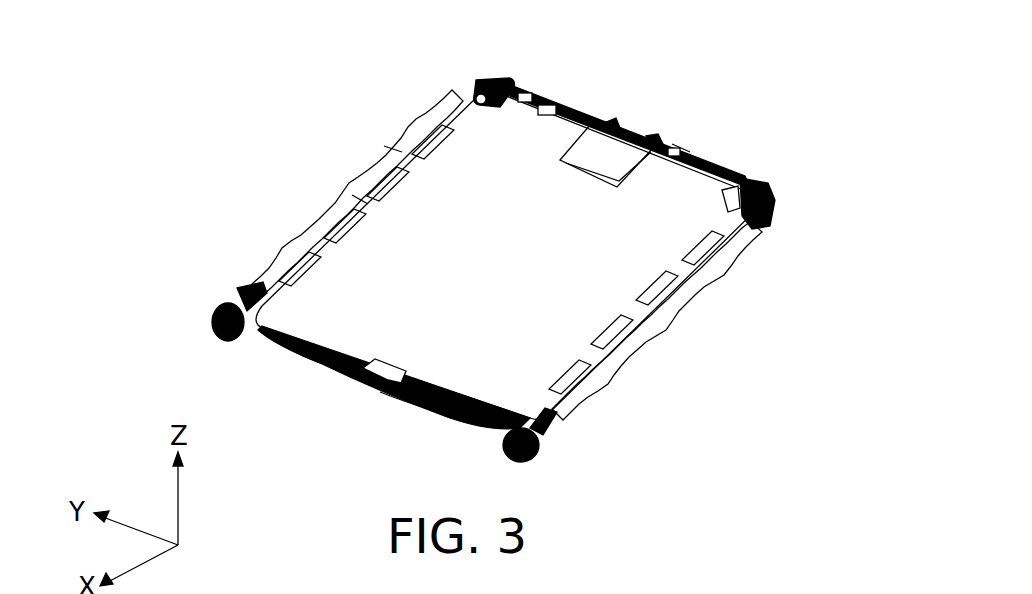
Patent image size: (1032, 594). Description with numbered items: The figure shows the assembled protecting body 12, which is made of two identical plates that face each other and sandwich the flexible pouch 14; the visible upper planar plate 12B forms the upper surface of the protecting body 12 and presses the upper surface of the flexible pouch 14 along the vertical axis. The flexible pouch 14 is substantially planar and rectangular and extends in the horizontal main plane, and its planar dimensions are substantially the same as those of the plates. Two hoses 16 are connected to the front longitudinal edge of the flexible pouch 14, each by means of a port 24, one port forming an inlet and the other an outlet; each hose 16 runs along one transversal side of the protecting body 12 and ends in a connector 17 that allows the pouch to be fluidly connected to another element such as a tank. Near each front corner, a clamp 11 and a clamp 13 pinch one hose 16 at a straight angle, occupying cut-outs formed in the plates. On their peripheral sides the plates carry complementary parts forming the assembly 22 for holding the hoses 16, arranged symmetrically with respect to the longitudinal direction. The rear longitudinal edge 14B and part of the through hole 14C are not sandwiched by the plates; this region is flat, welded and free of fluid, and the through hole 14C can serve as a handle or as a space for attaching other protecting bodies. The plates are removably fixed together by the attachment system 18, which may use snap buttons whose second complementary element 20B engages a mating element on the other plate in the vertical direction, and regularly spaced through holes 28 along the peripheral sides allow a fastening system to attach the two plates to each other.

The clamp 11 is at (507, 80).
The protecting body 12 is at (622, 220).
The planar plate 12B is at (606, 276).
The clamp 13 is at (770, 204).
The flexible pouch 14 is at (362, 398).
The rear longitudinal edge 14B is at (320, 367).
The through hole 14C is at (393, 378).
The hose 16 is at (543, 100).
The connector 17 is at (212, 330).
The attachment system 18 is at (358, 200).
The second complementary element 20B is at (447, 405).
The assembly for holding the hoses 22 is at (384, 150).
The port 24 is at (618, 122).
The through holes 28 is at (413, 162).